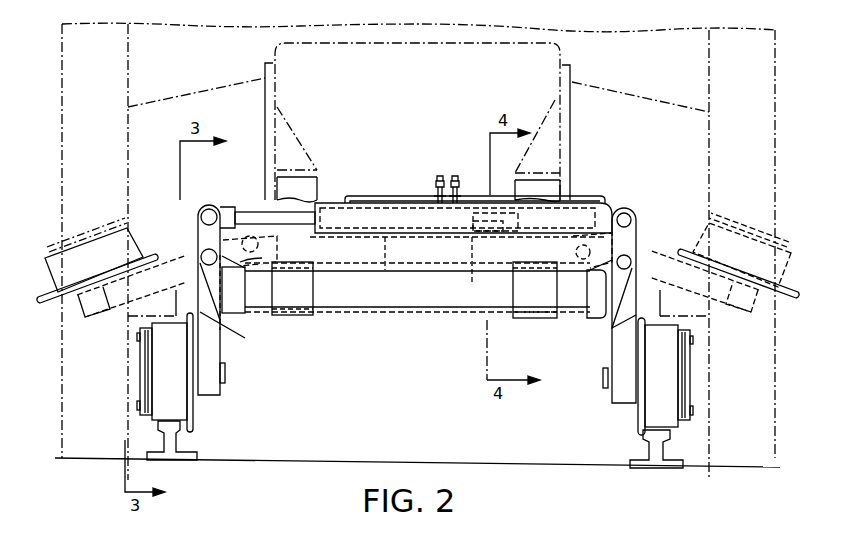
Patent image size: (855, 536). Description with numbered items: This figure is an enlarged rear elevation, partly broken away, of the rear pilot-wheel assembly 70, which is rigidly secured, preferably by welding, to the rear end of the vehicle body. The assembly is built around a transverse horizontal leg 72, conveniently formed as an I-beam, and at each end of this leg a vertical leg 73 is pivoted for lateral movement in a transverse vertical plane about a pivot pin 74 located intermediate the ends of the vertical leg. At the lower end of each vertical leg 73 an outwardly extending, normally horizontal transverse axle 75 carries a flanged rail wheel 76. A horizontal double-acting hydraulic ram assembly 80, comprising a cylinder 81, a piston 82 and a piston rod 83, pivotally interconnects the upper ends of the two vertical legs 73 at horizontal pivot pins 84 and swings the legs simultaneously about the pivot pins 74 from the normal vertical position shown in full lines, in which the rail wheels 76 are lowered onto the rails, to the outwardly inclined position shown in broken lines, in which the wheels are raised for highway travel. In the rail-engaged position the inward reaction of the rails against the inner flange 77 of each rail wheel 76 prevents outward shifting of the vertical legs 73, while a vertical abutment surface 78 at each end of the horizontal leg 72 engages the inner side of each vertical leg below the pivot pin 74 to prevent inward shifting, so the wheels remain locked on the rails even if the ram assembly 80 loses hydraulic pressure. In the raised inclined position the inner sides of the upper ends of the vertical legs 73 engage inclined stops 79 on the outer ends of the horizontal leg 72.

The rear pilot-wheel assembly 70 is at (418, 309).
The transverse horizontal leg 72 is at (343, 309).
The vertical leg 73 is at (220, 356).
The pivot pin 74 is at (205, 256).
The transverse axle 75 is at (226, 379).
The flanged rail wheel 76 is at (178, 411).
The inner flange 77 is at (192, 431).
The vertical abutment surface 78 is at (222, 323).
The inclined stop 79 is at (244, 266).
The horizontal double-acting hydraulic ram assembly 80 is at (620, 203).
The cylinder 81 is at (385, 272).
The piston 82 is at (467, 271).
The piston rod 83 is at (317, 200).
The horizontal pivot pin 84 is at (200, 215).